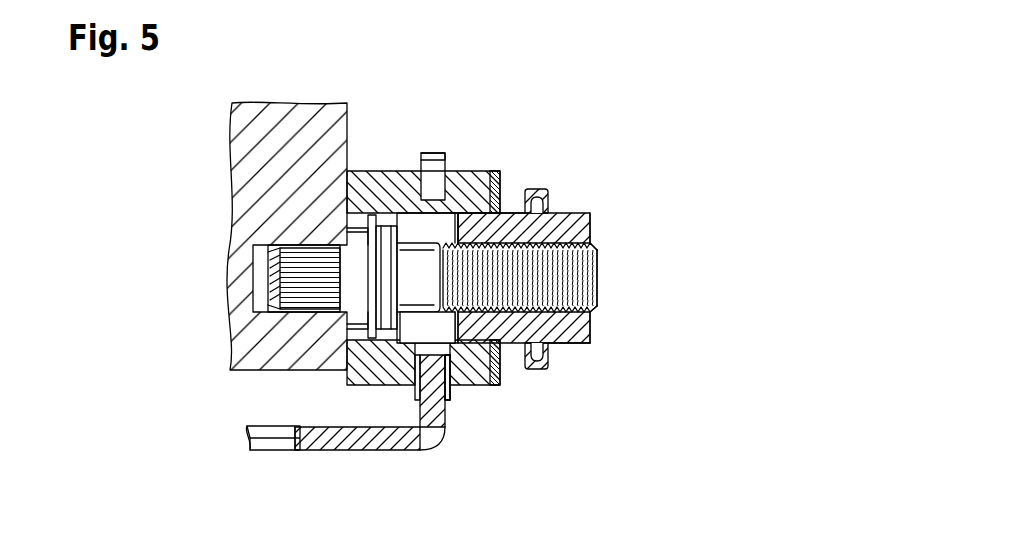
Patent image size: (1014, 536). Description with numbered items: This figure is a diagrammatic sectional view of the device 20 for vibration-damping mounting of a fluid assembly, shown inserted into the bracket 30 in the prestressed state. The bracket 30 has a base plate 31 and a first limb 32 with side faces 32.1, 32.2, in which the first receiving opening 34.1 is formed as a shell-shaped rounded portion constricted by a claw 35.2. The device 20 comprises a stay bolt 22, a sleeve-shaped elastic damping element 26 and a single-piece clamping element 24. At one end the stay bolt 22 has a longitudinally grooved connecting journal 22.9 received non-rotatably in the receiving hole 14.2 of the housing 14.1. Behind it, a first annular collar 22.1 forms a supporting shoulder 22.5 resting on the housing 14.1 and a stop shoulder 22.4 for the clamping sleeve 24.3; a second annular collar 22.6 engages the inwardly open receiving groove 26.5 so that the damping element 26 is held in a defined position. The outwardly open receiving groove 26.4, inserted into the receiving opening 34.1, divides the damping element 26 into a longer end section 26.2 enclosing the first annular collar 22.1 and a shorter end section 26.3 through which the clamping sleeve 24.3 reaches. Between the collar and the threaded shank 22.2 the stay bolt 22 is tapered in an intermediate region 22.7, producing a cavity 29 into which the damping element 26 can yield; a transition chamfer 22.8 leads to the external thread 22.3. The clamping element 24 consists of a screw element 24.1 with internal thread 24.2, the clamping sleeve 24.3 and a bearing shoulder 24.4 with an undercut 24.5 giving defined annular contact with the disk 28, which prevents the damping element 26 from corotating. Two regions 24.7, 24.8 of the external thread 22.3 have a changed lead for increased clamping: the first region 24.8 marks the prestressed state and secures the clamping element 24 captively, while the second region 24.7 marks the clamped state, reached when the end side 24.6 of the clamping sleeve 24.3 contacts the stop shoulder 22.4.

The housing 14.1 is at (240, 350).
The receiving hole 14.2 is at (292, 260).
The device for vibration-damping mounting 20 is at (560, 86).
The stay bolt 22 is at (608, 244).
The first annular collar 22.1 is at (350, 242).
The threaded shank 22.2 is at (596, 308).
The external thread 22.3 is at (597, 250).
The stop shoulder 22.4 is at (374, 342).
The supporting shoulder 22.5 is at (352, 322).
The second annular collar 22.6 is at (358, 240).
The intermediate region 22.7 is at (412, 257).
The transition chamfer 22.8 is at (442, 350).
The connecting journal 22.9 is at (280, 247).
The clamping element 24 is at (588, 352).
The screw element 24.1 is at (594, 228).
The internal thread 24.2 is at (580, 336).
The clamping sleeve 24.3 is at (552, 184).
The bearing shoulder 24.4 is at (572, 212).
The undercut 24.5 is at (546, 370).
The end side 24.6 is at (512, 208).
The second region 24.7 is at (545, 297).
The first region 24.8 is at (538, 272).
The elastic damping element 26 is at (461, 158).
The longer end section 26.2 is at (346, 442).
The shorter end section 26.3 is at (500, 372).
The receiving groove open to the outside 26.4 is at (420, 442).
The receiving groove open to the inside 26.5 is at (376, 432).
The disk 28 is at (495, 180).
The cavity 29 is at (440, 339).
The bracket 30 is at (246, 460).
The base plate 31 is at (308, 452).
The first limb 32 is at (430, 402).
The side face 32.1 is at (452, 412).
The side face 32.2 is at (421, 165).
The first receiving opening 34.1 is at (454, 362).
The claw 35.2 is at (432, 158).